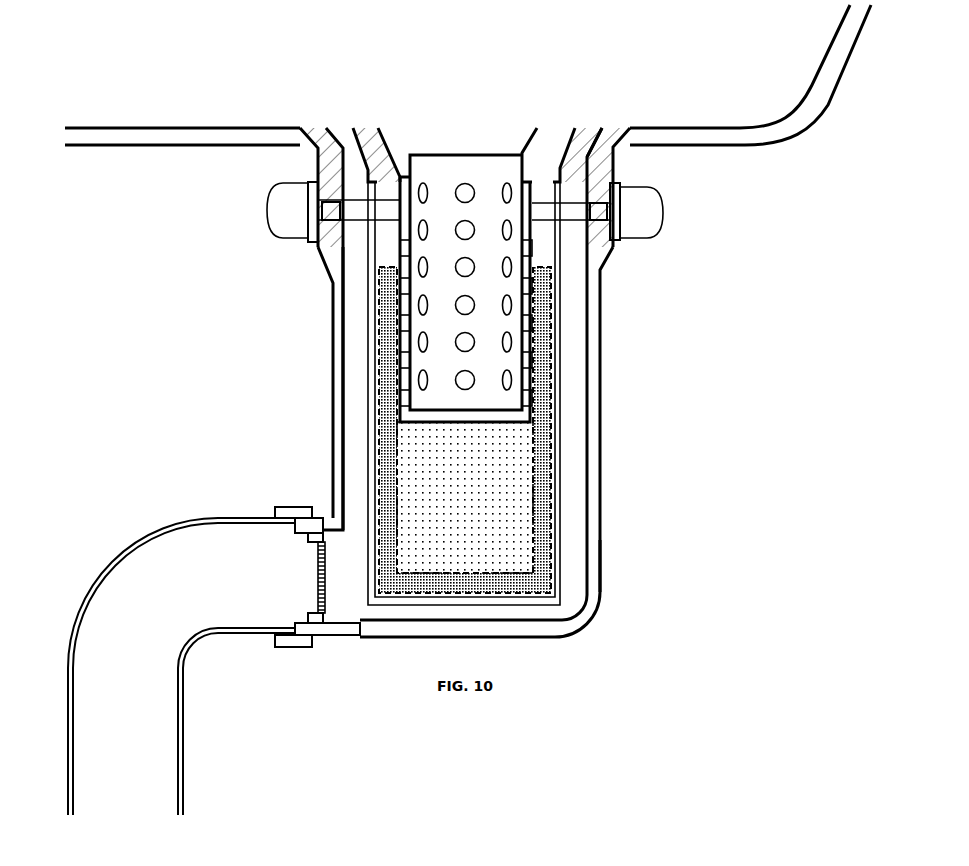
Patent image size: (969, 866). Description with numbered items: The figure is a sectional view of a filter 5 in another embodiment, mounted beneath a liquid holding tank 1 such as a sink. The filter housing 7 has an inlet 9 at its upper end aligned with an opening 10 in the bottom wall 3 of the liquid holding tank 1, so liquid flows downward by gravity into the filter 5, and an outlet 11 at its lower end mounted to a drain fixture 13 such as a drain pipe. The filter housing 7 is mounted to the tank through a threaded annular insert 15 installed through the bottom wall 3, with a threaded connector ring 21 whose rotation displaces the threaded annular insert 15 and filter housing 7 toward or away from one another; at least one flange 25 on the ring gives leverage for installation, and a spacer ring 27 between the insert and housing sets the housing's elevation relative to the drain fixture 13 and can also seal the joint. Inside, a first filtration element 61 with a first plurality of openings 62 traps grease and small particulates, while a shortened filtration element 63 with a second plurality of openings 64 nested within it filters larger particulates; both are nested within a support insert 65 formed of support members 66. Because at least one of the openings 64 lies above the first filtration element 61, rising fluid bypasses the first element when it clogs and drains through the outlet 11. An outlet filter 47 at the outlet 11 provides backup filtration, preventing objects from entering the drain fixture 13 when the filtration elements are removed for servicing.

The liquid holding tank 1 is at (833, 73).
The bottom wall 3 is at (188, 128).
The filter 5 is at (625, 432).
The filter housing 7 is at (600, 563).
The inlet 9 is at (465, 128).
The opening 10 is at (630, 128).
The outlet 11 is at (280, 495).
The drain fixture 13 is at (183, 729).
The threaded annular insert 15 is at (313, 128).
The threaded connector ring 21 is at (313, 242).
The flange 25 is at (267, 210).
The spacer ring 27 is at (577, 223).
The outlet filter 47 is at (318, 593).
The first filtration element 61 is at (441, 275).
The first plurality of openings 62 is at (497, 508).
The shortened filtration element 63 is at (558, 128).
The second plurality of openings 64 is at (457, 313).
The support insert 65 is at (592, 128).
The support members 66 is at (560, 492).